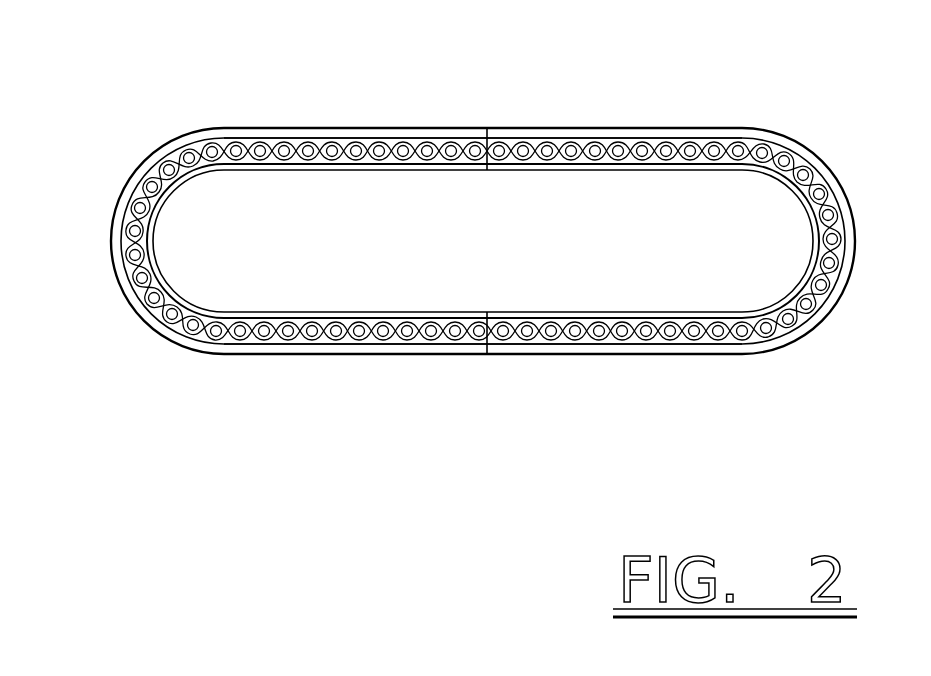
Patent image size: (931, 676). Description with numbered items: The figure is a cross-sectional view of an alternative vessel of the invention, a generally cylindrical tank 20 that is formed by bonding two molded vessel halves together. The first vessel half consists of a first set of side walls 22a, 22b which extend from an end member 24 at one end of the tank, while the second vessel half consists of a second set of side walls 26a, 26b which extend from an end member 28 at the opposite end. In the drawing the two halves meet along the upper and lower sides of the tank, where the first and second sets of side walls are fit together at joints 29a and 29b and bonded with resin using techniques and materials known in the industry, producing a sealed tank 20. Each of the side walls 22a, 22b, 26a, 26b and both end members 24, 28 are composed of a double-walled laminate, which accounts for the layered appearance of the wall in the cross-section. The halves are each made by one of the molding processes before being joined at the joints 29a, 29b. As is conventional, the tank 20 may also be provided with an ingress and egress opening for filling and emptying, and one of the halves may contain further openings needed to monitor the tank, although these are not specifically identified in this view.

The tank 20 is at (115, 113).
The side wall 22a is at (260, 127).
The side wall 22b is at (269, 353).
The end member 24 is at (120, 288).
The side wall 26a is at (723, 128).
The side wall 26b is at (665, 357).
The end member 28 is at (810, 333).
The joint 29a is at (487, 128).
The joint 29b is at (487, 348).